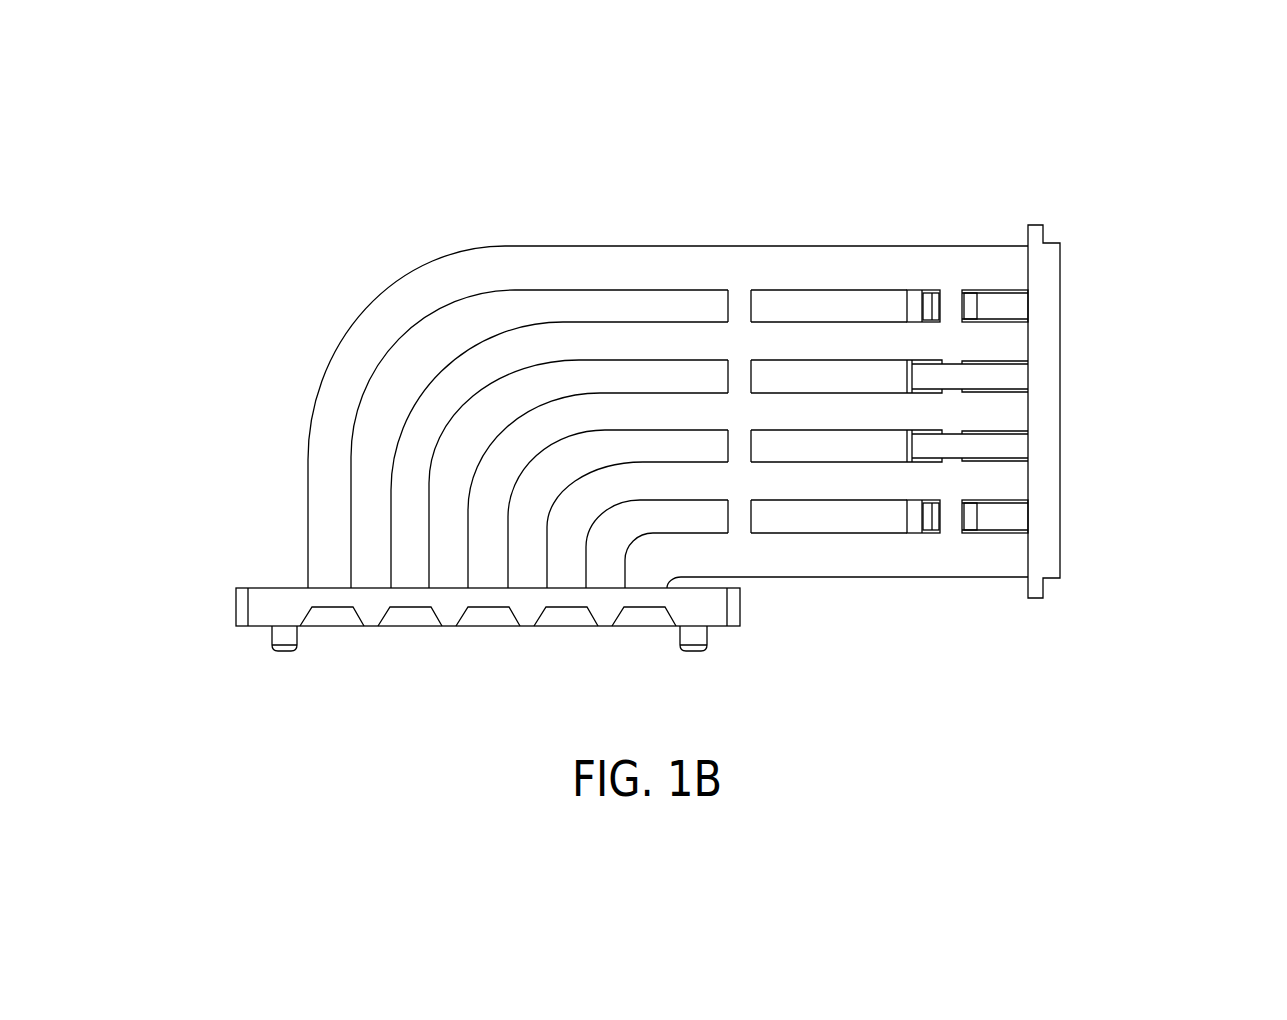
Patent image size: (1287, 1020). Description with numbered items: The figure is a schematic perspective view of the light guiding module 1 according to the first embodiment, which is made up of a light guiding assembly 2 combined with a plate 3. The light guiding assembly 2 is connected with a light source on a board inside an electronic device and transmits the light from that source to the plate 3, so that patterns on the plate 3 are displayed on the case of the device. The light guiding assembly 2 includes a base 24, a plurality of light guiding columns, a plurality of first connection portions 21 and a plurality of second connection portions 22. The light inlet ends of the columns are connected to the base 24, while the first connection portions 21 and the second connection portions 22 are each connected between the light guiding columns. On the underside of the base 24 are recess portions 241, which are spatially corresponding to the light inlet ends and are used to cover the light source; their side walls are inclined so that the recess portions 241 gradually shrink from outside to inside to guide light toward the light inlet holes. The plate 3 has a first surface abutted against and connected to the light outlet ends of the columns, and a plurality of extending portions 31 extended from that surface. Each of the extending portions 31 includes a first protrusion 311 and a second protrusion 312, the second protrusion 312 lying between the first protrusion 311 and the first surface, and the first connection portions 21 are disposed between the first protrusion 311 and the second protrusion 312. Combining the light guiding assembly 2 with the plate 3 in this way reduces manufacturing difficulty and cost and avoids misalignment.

The light guiding module 1 is at (1249, 103).
The light guiding assembly 2 is at (375, 345).
The first connection portions 21 is at (952, 303).
The second connection portions 22 is at (906, 362).
The base 24 is at (277, 608).
The recess portions 241 is at (650, 634).
The plate 3 is at (1045, 280).
The extending portions 31 is at (1017, 520).
The first protrusion 311 is at (927, 303).
The second protrusion 312 is at (973, 297).